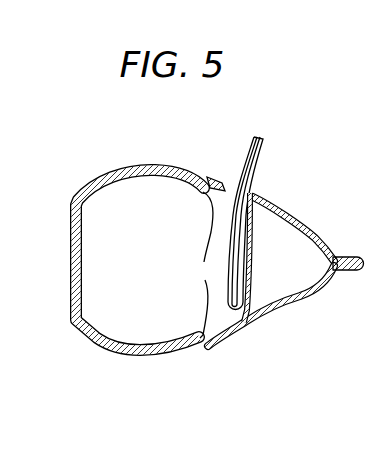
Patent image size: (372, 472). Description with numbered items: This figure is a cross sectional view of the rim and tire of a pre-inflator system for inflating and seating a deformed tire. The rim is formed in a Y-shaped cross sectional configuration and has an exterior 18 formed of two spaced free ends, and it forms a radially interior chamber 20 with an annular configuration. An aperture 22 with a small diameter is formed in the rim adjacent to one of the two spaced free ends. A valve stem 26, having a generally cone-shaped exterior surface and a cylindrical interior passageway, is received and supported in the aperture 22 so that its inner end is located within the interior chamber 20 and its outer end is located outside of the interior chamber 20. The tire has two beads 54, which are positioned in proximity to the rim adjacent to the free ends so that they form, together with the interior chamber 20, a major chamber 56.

The exterior 18 is at (210, 176).
The radially interior chamber 20 is at (302, 263).
The aperture 22 is at (252, 192).
The valve stem 26 is at (257, 175).
The beads 54 is at (204, 262).
The major chamber 56 is at (178, 247).